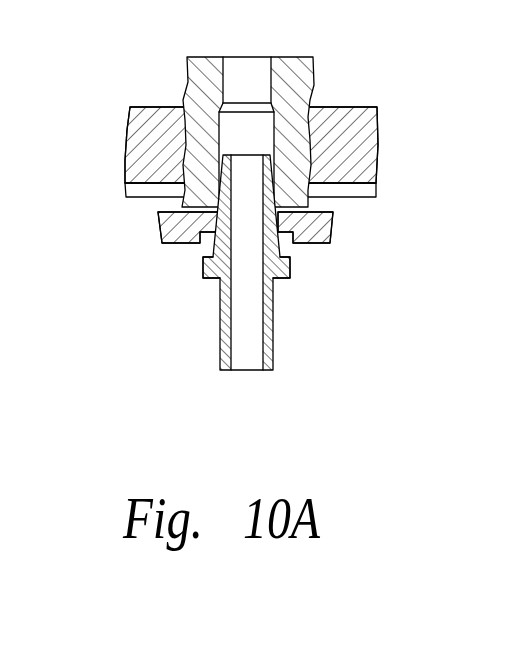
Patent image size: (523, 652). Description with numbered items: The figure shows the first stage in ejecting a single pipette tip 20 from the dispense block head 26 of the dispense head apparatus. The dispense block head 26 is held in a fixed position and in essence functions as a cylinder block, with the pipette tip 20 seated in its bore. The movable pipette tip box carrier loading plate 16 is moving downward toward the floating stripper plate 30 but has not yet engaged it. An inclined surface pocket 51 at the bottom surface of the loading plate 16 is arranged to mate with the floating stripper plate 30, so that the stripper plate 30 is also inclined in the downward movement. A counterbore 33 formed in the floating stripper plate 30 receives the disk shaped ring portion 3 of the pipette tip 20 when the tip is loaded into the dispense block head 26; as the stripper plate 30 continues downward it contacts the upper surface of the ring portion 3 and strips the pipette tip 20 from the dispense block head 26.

The dispense block head 26 is at (186, 75).
The movable pipette tip box carrier loading plate 16 is at (126, 150).
The inclined surface pocket 51 is at (126, 188).
The floating stripper plate 30 is at (159, 237).
The counterbore 33 is at (204, 259).
The disk shaped ring portion 3 is at (291, 268).
The pipette tip 20 is at (194, 331).